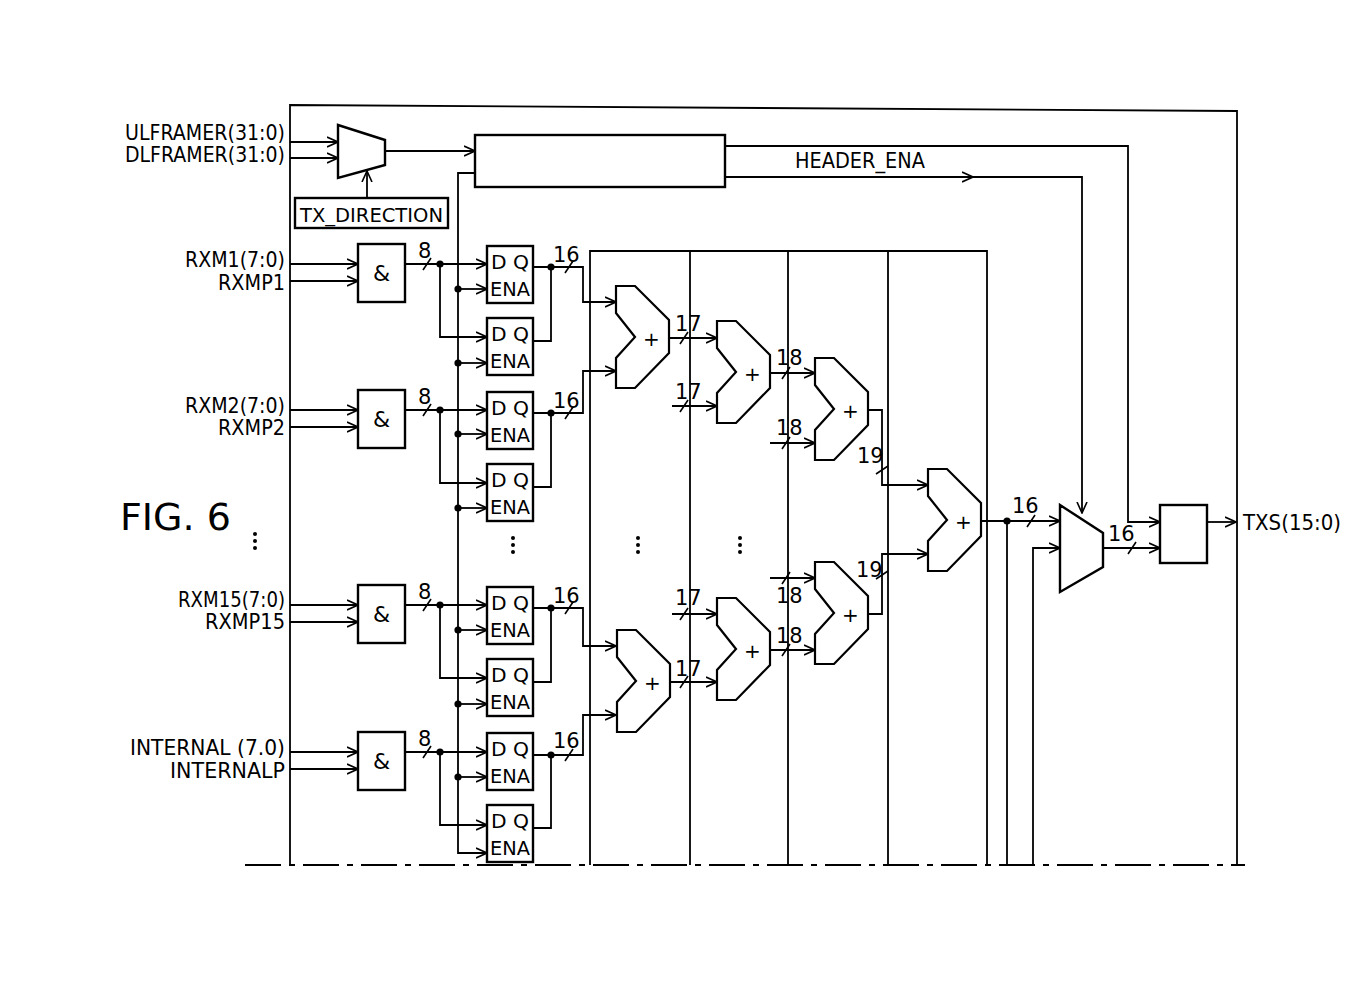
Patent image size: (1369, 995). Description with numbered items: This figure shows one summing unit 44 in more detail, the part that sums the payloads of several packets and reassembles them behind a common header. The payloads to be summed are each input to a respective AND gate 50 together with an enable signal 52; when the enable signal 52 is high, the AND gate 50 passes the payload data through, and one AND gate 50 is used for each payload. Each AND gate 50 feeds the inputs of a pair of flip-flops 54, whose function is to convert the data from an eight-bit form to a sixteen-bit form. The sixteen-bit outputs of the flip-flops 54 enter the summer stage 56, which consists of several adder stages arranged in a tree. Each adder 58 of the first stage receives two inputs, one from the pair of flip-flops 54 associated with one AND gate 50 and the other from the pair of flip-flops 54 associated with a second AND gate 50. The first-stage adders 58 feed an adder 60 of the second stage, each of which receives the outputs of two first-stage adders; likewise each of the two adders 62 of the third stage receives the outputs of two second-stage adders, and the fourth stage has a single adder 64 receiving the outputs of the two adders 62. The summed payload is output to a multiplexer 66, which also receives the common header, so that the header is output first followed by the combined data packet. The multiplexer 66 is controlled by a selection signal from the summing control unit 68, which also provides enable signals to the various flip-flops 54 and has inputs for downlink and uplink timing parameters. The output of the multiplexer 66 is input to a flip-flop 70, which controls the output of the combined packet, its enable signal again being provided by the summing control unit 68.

The summing unit 44 is at (1229, 190).
The AND gate 50 is at (382, 302).
The enable signal 52 is at (327, 284).
The flip-flops 54 is at (510, 246).
The summer stage 56 is at (838, 251).
The adders of the first stage 58 is at (646, 301).
The adder of a second stage 60 is at (745, 338).
The adders of the third stage 62 is at (840, 373).
The adder of the fourth stage 64 is at (952, 566).
The multiplexer 66 is at (1085, 560).
The summing control unit 68 is at (630, 187).
The flip-flop 70 is at (1195, 563).